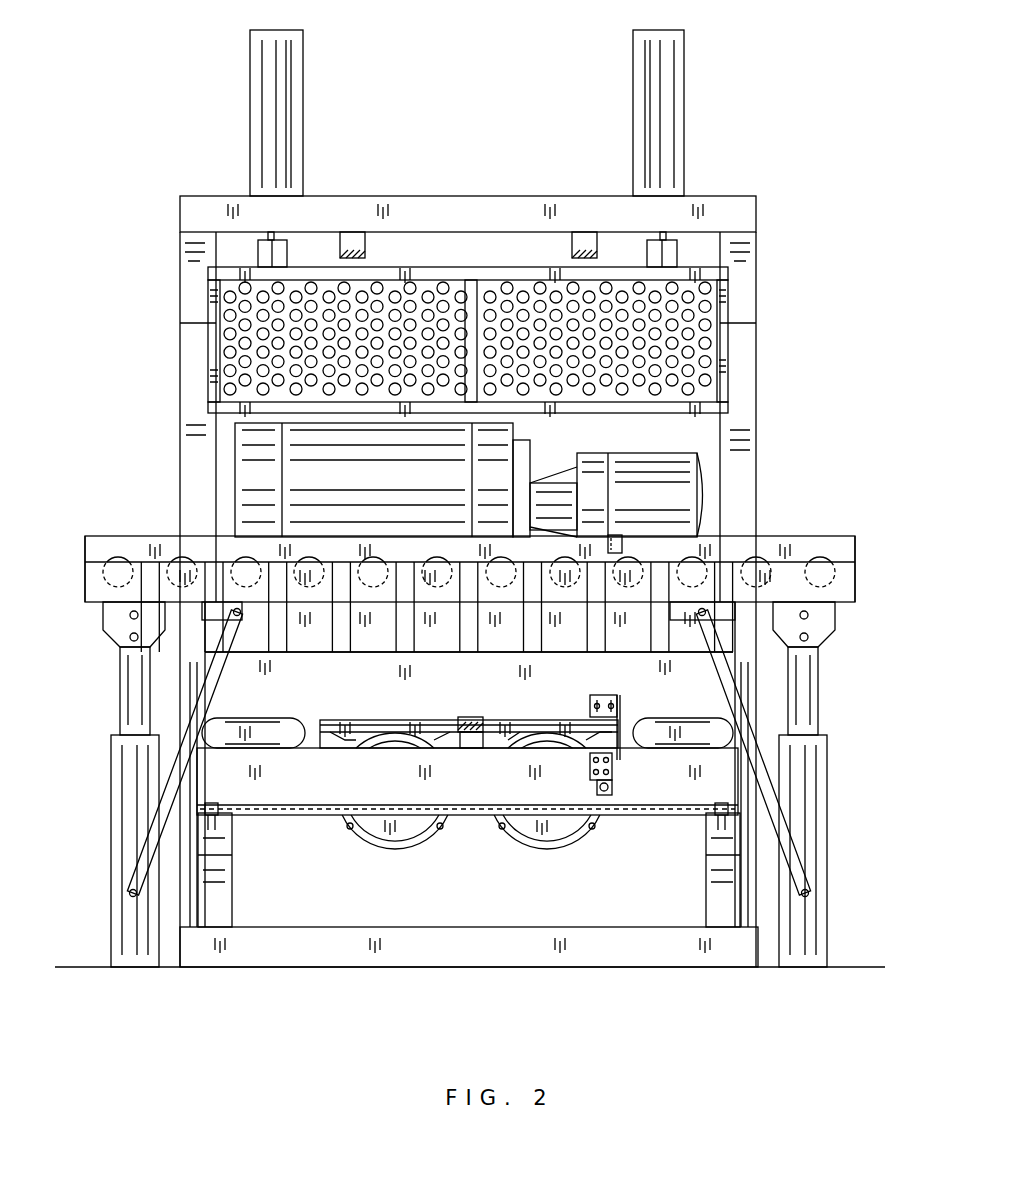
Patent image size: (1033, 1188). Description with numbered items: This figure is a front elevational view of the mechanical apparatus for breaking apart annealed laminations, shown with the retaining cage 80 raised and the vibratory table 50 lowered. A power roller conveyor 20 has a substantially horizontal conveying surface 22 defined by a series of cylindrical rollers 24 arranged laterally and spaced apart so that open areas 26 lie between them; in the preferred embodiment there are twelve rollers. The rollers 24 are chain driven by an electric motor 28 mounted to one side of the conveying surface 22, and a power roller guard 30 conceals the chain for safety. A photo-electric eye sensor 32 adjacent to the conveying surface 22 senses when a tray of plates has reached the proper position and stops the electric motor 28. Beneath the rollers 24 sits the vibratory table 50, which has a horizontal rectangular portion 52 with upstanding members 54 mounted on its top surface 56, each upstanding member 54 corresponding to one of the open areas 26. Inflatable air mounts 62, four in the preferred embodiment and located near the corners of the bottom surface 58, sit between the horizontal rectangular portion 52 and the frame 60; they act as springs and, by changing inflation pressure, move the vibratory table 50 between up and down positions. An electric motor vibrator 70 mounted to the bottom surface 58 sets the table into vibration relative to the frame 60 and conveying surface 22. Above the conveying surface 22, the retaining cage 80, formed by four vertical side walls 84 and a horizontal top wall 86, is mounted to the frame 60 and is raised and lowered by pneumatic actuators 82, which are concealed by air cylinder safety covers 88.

The power roller conveyor 20 is at (857, 545).
The conveying surface 22 is at (98, 547).
The cylindrical rollers 24 is at (248, 570).
The open areas 26 is at (281, 533).
The electric motor 28 is at (668, 490).
The power roller guard 30 is at (313, 473).
The photo-electric eye sensor 32 is at (670, 620).
The vibratory table 50 is at (383, 692).
The horizontal rectangular portion 52 is at (245, 693).
The upstanding members 54 is at (343, 627).
The top surface 56 is at (385, 630).
The bottom surface 58 is at (340, 742).
The frame 60 is at (628, 790).
The inflatable air mounts 62 is at (220, 735).
The electric motor vibrator 70 is at (400, 833).
The retaining cage 80 is at (432, 272).
The pneumatic actuators 82 is at (277, 240).
The vertical side walls 84 is at (538, 283).
The horizontal top wall 86 is at (498, 272).
The air cylinder safety covers 88 is at (265, 72).